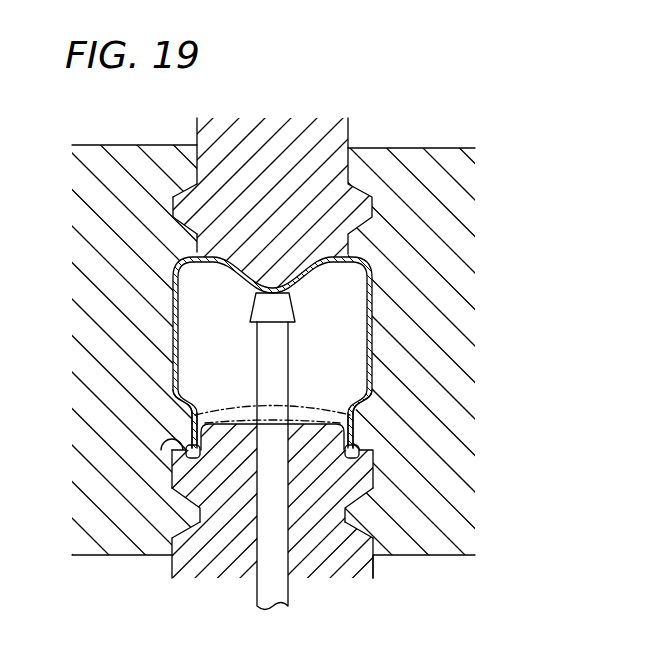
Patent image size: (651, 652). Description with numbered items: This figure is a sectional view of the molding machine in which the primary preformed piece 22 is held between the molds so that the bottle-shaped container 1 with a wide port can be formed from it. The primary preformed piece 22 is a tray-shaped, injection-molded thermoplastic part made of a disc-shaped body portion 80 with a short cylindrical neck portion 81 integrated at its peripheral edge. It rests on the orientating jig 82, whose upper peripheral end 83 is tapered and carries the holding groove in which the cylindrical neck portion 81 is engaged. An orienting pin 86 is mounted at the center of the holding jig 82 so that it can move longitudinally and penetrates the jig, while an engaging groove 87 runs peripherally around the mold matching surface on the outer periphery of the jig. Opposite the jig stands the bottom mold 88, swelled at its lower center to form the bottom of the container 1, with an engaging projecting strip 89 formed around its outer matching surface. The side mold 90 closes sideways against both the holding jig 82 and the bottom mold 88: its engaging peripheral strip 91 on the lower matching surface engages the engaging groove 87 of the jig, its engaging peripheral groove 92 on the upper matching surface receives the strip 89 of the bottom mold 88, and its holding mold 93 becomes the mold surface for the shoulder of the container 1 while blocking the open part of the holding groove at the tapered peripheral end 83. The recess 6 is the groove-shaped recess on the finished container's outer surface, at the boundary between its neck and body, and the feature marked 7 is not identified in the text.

The bottle-shaped container 1 is at (183, 326).
The recess 6 is at (187, 452).
The skirt of diaphragm 7 is at (190, 453).
The primary preformed piece 22 is at (310, 396).
The body portion 80 is at (312, 430).
The cylindrical neck portion 81 is at (190, 437).
The orientating jig 82 is at (319, 545).
The upper peripheral end 83 is at (187, 457).
The orienting pin 86 is at (275, 340).
The engaging groove 87 is at (180, 527).
The bottom mold 88 is at (312, 136).
The engaging projecting strip 89 is at (184, 186).
The side mold 90 is at (87, 225).
The engaging peripheral strip 91 is at (198, 508).
The engaging peripheral groove 92 is at (195, 218).
The holding mold 93 is at (188, 411).